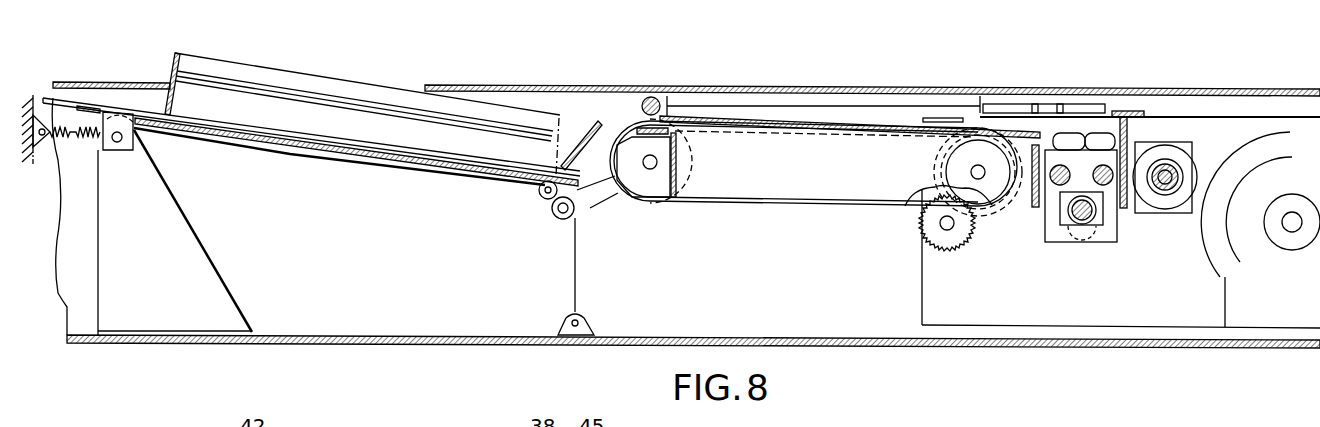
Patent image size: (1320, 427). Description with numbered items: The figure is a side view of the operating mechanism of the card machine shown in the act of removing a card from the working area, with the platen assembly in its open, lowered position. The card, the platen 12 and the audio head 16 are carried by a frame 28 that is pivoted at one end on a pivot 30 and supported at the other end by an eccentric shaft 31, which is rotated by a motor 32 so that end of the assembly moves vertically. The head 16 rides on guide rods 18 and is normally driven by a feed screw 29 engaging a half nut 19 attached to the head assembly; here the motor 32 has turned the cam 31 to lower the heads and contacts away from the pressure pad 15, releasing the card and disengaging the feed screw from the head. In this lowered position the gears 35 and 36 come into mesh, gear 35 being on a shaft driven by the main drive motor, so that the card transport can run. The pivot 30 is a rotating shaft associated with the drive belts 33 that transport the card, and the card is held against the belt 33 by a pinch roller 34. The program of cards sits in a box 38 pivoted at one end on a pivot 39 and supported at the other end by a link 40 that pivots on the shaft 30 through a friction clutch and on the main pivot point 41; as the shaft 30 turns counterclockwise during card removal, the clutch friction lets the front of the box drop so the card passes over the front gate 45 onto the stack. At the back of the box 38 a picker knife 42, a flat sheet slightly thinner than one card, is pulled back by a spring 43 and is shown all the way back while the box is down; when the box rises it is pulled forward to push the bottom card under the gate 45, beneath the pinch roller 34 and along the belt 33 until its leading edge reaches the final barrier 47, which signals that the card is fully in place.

The platen 12 is at (738, 125).
The pressure pad 15 is at (1035, 106).
The audio head 16 is at (1036, 231).
The guide rods 18 is at (1060, 166).
The half nut 19 is at (1108, 242).
The frame 28 is at (851, 184).
The feed screw 29 is at (1080, 225).
The pivot 30 is at (655, 169).
The eccentric shaft 31 is at (1176, 171).
The motor 32 is at (1284, 132).
The drive belts 33 is at (645, 204).
The pinch roller 34 is at (643, 96).
The gear 35 is at (968, 245).
The gear 36 is at (982, 212).
The box 38 is at (496, 100).
The pivot 39 is at (148, 118).
The link 40 is at (574, 216).
The main pivot point 41 is at (544, 200).
The picker knife 42 is at (140, 105).
The spring 43 is at (97, 137).
The gate 45 is at (577, 140).
The final barrier 47 is at (1122, 150).